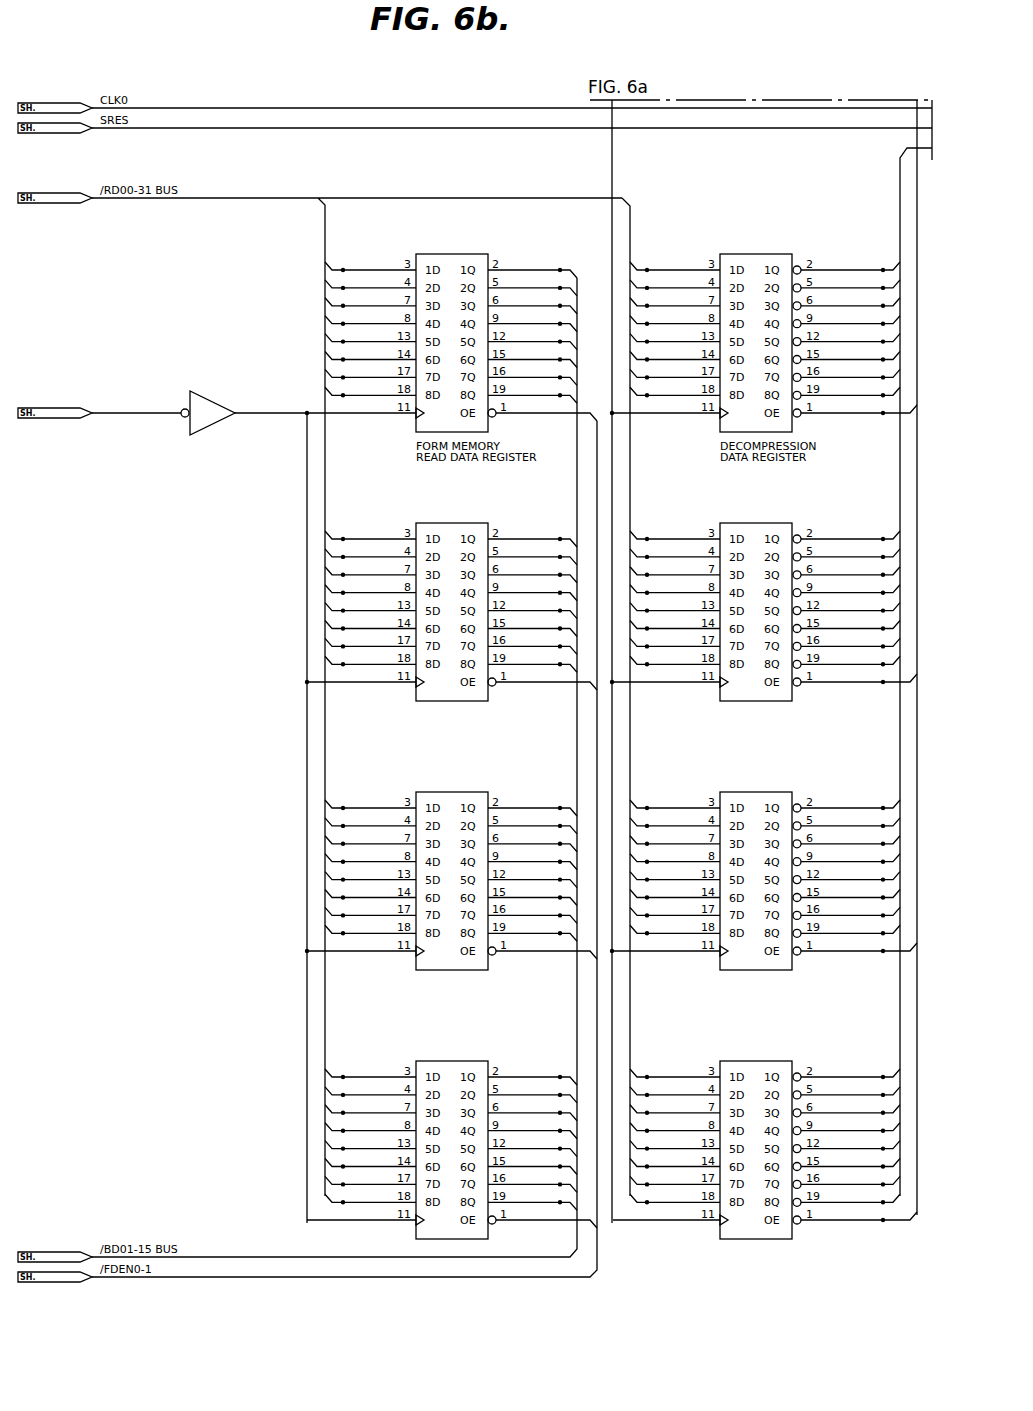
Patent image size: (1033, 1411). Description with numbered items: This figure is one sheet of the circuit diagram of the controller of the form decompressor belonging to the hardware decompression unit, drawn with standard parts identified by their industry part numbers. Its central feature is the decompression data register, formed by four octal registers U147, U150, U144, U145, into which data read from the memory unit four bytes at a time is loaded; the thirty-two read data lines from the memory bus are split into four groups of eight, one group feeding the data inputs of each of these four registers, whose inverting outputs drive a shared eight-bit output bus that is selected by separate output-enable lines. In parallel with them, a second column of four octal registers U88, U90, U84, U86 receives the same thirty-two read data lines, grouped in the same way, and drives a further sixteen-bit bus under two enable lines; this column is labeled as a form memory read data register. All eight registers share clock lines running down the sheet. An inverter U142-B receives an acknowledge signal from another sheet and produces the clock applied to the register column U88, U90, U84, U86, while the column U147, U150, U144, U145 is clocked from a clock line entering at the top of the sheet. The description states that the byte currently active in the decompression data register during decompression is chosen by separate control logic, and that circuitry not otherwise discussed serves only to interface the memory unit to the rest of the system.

The form memory read data register (74F374) U88 is at (452, 335).
The form memory read data register (74F374) U90 is at (452, 604).
The form memory read data register (74F374) U84 is at (452, 873).
The form memory read data register (74F374) U86 is at (452, 1142).
The decompression data register U147 is at (765, 335).
The decompression data register U150 is at (765, 604).
The decompression data register U144 is at (765, 873).
The decompression data register U145 is at (765, 1142).
The inverter (74F04) U142-B is at (199, 413).